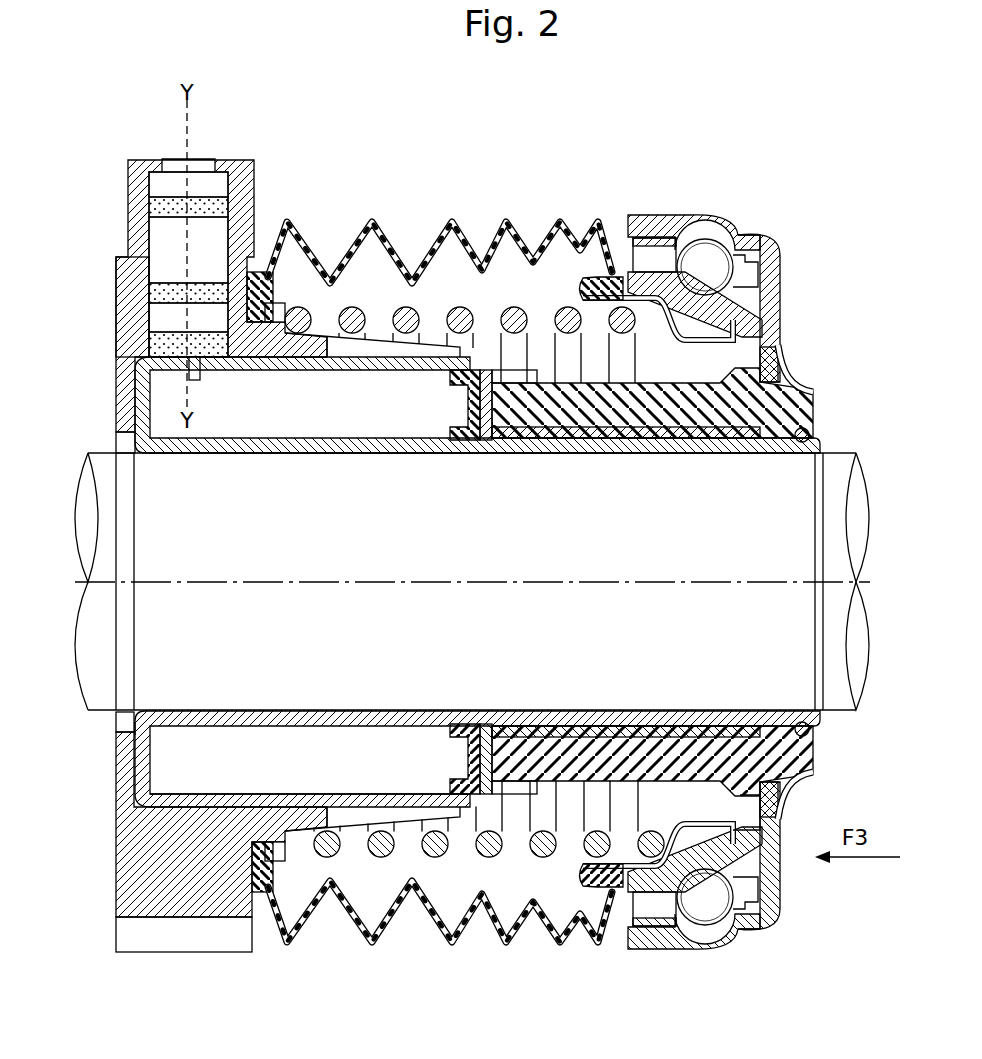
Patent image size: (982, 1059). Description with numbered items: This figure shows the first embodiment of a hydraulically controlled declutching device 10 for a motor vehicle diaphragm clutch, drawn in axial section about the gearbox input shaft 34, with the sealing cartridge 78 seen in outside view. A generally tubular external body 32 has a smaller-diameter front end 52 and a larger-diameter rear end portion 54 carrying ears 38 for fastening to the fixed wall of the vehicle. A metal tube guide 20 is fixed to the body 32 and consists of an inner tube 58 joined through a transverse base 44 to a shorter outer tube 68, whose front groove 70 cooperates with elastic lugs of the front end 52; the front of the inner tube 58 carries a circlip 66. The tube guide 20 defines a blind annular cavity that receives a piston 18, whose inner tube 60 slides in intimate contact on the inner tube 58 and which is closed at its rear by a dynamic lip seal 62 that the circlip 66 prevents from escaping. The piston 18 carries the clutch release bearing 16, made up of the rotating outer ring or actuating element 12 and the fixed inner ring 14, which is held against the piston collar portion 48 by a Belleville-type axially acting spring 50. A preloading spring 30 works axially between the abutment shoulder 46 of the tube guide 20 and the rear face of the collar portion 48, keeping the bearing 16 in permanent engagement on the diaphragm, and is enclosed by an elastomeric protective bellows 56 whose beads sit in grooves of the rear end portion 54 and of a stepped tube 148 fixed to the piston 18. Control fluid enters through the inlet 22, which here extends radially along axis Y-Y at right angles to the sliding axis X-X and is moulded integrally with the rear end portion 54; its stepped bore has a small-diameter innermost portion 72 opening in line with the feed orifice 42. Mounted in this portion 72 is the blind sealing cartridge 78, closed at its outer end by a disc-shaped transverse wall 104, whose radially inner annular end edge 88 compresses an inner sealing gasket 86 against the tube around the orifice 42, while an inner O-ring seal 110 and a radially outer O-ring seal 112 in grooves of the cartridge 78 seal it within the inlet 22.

The hydraulically controlled declutching device 10 is at (654, 172).
The actuating element 12 is at (727, 215).
The inner ring 14 is at (778, 310).
The clutch release bearing 16 is at (763, 208).
The piston 18 is at (832, 407).
The tube guide 20 is at (348, 464).
The inlet 22 is at (264, 177).
The preloading spring 30 is at (436, 848).
The external body 32 is at (275, 820).
The input shaft 34 is at (86, 672).
The ears 38 is at (180, 955).
The orifice 42 is at (200, 372).
The base 44 is at (145, 756).
The abutment shoulder 46 is at (285, 858).
The collar portion 48 is at (795, 380).
The axially acting spring 50 is at (790, 353).
The front end 52 is at (365, 810).
The rear end portion 54 is at (140, 856).
The protective bellows 56 is at (518, 224).
The inner tube 58 is at (430, 455).
The tube 60 is at (540, 440).
The dynamic seal 62 is at (438, 398).
The circlip 66 is at (810, 434).
The outer tube 68 is at (318, 800).
The groove 70 is at (470, 790).
The radially innermost portion 72 is at (165, 248).
The sealing cartridge 78 is at (134, 277).
The radially inner sealing gasket 86 is at (148, 342).
The radially inner annular end edge 88 is at (150, 333).
The transverse wall 104 is at (210, 165).
The inner O-ring seal 110 is at (210, 288).
The radially outer O-ring seal 112 is at (152, 210).
The stepped tube 148 is at (715, 830).